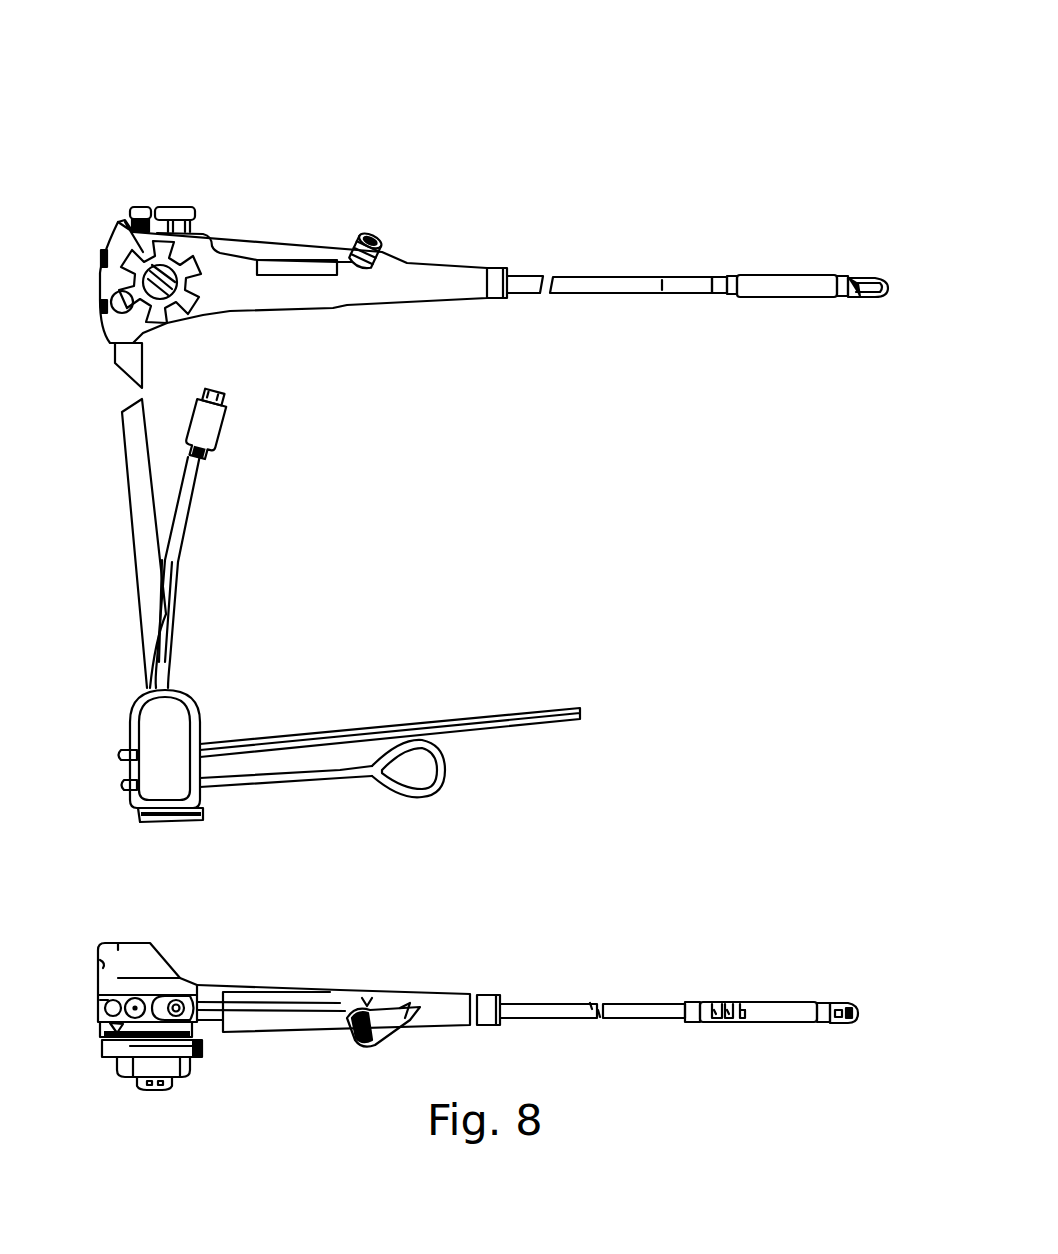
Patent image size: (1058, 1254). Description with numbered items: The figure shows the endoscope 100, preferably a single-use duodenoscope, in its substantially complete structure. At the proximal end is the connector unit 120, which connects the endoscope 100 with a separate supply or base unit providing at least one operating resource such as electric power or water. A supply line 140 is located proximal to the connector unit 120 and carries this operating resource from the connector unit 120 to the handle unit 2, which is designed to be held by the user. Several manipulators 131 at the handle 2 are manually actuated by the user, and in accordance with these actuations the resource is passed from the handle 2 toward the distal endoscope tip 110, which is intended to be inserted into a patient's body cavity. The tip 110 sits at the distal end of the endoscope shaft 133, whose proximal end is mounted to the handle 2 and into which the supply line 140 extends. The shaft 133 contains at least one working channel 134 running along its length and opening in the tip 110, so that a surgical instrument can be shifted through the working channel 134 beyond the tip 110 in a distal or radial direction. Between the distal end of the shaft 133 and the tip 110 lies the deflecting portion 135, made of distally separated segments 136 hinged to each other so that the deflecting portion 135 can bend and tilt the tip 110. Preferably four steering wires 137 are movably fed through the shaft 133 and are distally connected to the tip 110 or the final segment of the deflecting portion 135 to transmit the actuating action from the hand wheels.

The endoscope 100 is at (483, 145).
The handle unit 2 is at (280, 245).
The endoscope tip 110 is at (873, 268).
The connector unit 120 is at (617, 418).
The manipulators 131 is at (140, 198).
The endoscope shaft 133 is at (622, 270).
The working channel 134 is at (345, 245).
The deflecting portion 135 is at (765, 265).
The segments 136 is at (700, 1030).
The steering wires 137 is at (335, 1008).
The supply line 140 is at (125, 495).